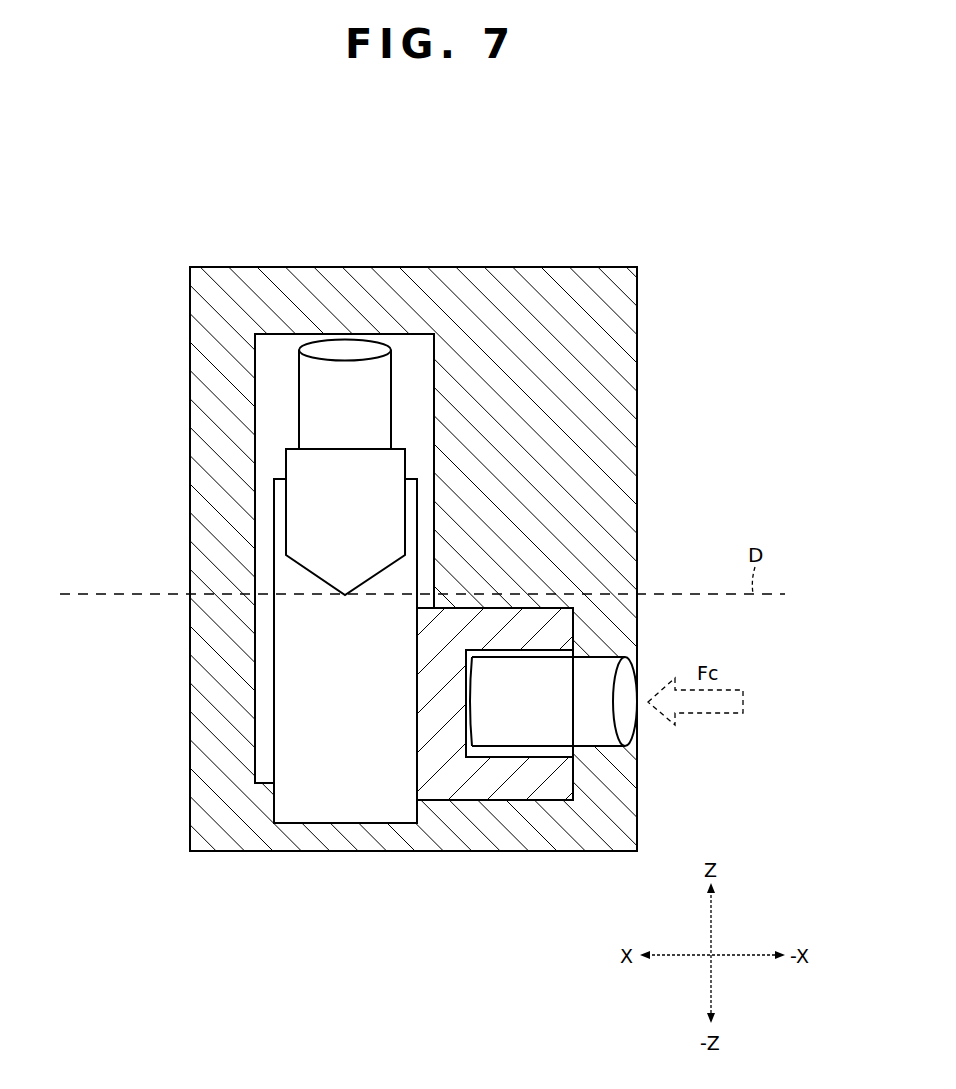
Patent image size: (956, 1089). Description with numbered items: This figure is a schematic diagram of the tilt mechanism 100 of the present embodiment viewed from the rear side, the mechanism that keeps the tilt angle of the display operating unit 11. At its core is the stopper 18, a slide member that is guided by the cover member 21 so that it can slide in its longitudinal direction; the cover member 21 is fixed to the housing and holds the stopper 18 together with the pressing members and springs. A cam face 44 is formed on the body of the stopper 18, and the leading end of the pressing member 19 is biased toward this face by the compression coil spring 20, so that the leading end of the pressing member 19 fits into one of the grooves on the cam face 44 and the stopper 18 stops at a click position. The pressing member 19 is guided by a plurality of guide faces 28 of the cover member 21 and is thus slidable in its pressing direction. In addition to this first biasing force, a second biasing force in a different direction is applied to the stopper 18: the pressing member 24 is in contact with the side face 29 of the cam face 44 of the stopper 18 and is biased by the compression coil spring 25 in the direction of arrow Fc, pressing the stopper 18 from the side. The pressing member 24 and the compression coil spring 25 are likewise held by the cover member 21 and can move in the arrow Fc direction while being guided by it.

The tilt mechanism 100 is at (598, 222).
The display operating unit 11 is at (190, 328).
The cover member 21 is at (500, 282).
The guide faces 28 is at (258, 360).
The compression coil spring 20 is at (346, 348).
The pressing member 19 is at (300, 468).
The side face 29 is at (417, 527).
The stopper 18 is at (275, 705).
The cam face 44 is at (346, 794).
The pressing member 24 is at (573, 625).
The compression coil spring 25 is at (625, 730).